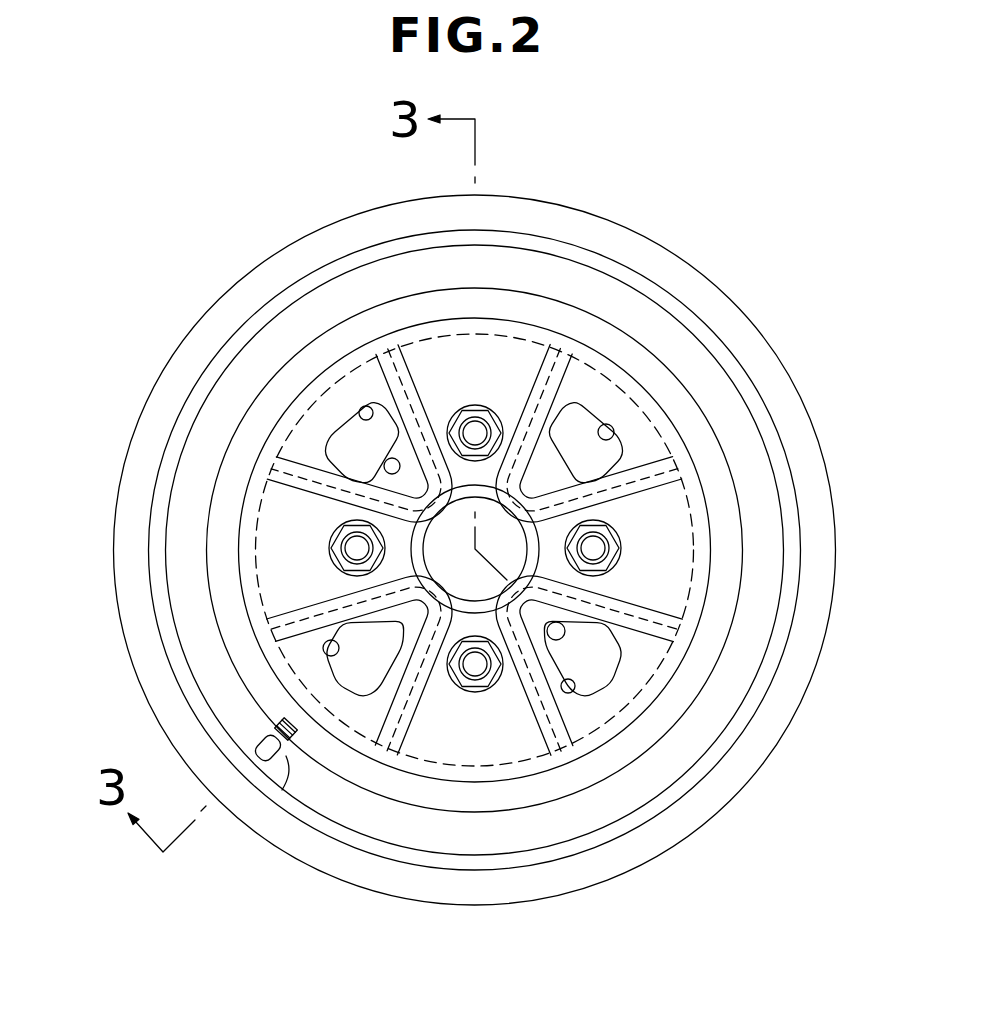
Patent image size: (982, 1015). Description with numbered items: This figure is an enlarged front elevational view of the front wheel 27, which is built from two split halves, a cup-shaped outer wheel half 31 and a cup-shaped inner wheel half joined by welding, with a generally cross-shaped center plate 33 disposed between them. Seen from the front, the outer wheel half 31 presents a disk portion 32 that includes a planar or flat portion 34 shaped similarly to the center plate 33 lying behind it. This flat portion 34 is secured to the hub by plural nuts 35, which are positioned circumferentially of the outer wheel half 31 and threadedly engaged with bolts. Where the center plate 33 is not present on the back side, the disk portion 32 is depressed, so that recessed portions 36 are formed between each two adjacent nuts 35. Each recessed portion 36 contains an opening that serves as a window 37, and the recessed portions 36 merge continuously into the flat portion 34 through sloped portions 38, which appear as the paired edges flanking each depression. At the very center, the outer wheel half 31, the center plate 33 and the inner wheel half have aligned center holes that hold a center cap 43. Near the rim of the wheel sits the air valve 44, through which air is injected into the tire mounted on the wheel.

The front wheel 27 is at (212, 287).
The outer wheel half 31 is at (534, 224).
The disk portion 32 is at (630, 415).
The center plate 33 is at (690, 505).
The flat portion 34 is at (652, 588).
The nuts 35 is at (475, 404).
The recessed portions 36 is at (297, 438).
The window 37 is at (362, 416).
The sloped portions 38 is at (390, 354).
The center cap 43 is at (490, 614).
The air valve 44 is at (282, 792).